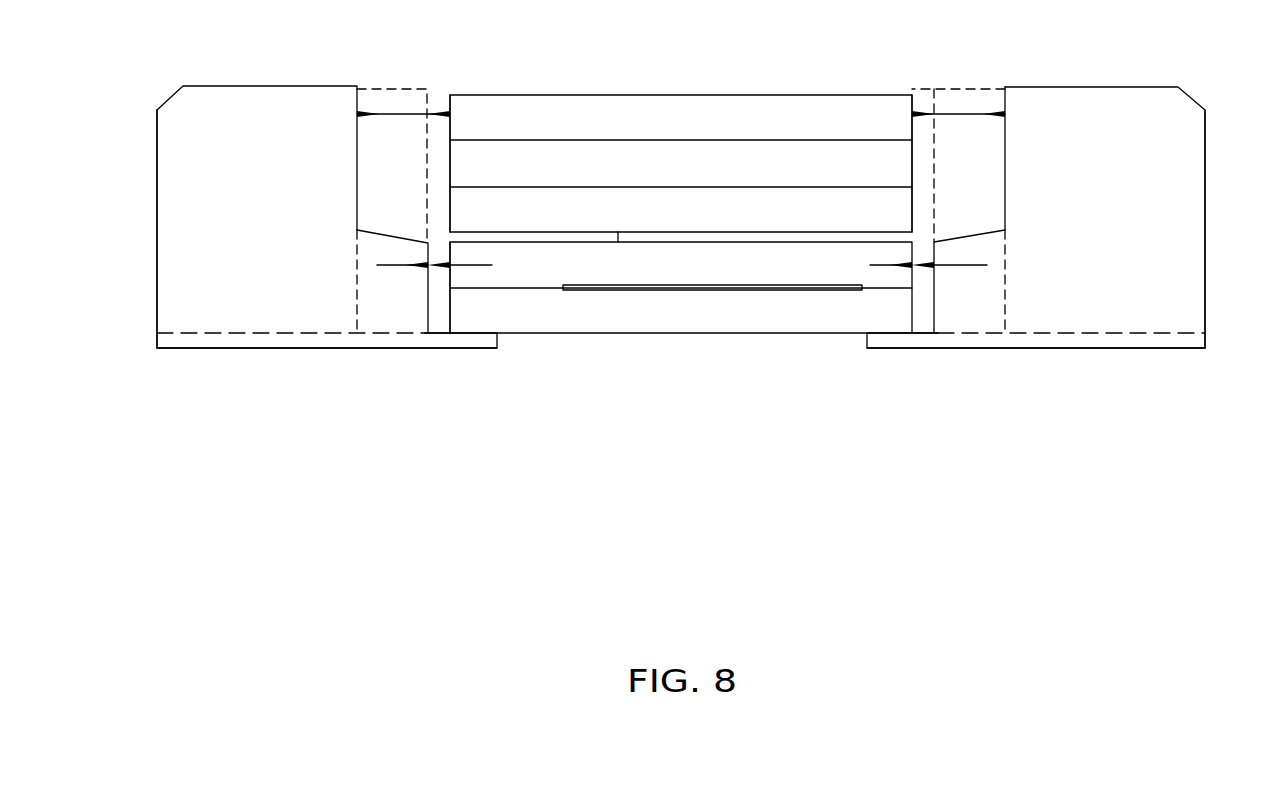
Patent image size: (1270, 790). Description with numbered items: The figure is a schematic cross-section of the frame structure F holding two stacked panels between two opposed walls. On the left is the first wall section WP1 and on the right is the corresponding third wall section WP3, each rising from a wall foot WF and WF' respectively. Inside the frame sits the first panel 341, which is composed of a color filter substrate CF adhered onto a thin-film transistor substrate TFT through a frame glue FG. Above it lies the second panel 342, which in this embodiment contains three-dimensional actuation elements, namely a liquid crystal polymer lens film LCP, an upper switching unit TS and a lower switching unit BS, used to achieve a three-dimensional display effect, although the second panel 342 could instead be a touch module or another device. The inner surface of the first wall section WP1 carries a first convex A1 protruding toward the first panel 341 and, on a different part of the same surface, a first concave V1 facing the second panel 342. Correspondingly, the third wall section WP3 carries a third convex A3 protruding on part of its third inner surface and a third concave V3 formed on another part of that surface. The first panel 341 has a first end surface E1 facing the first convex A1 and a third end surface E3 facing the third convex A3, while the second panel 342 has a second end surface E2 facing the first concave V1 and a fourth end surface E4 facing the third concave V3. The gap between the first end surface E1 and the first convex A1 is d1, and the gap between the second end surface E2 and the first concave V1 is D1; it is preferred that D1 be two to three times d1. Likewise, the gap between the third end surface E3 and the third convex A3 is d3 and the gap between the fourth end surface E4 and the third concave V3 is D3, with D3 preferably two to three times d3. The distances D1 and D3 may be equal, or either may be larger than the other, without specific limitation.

The first wall section WP1 is at (232, 225).
The third wall section WP3 is at (1087, 225).
The first concave V1 is at (377, 178).
The third concave V3 is at (954, 178).
The first convex A1 is at (371, 313).
The third convex A3 is at (961, 313).
The liquid crystal polymer lens film LCP is at (665, 131).
The upper switching unit TS is at (671, 176).
The lower switching unit BS is at (671, 221).
The color filter substrate CF is at (672, 276).
The thin-film transistor substrate TFT is at (666, 323).
The frame glue FG is at (612, 290).
The second panel 342 is at (657, 210).
The first panel 341 is at (750, 265).
The distance between second end surface and first concave D1 is at (400, 112).
The distance between fourth end surface and third concave D3 is at (963, 110).
The distance between first end surface and first convex d1 is at (436, 262).
The distance between third end surface and third convex d3 is at (928, 262).
The first end surface E1 is at (450, 307).
The second end surface E2 is at (448, 107).
The third end surface E3 is at (912, 307).
The fourth end surface E4 is at (913, 102).
The frame structure F is at (157, 183).
The wall foot WF is at (307, 373).
The wall foot WF' is at (1055, 373).